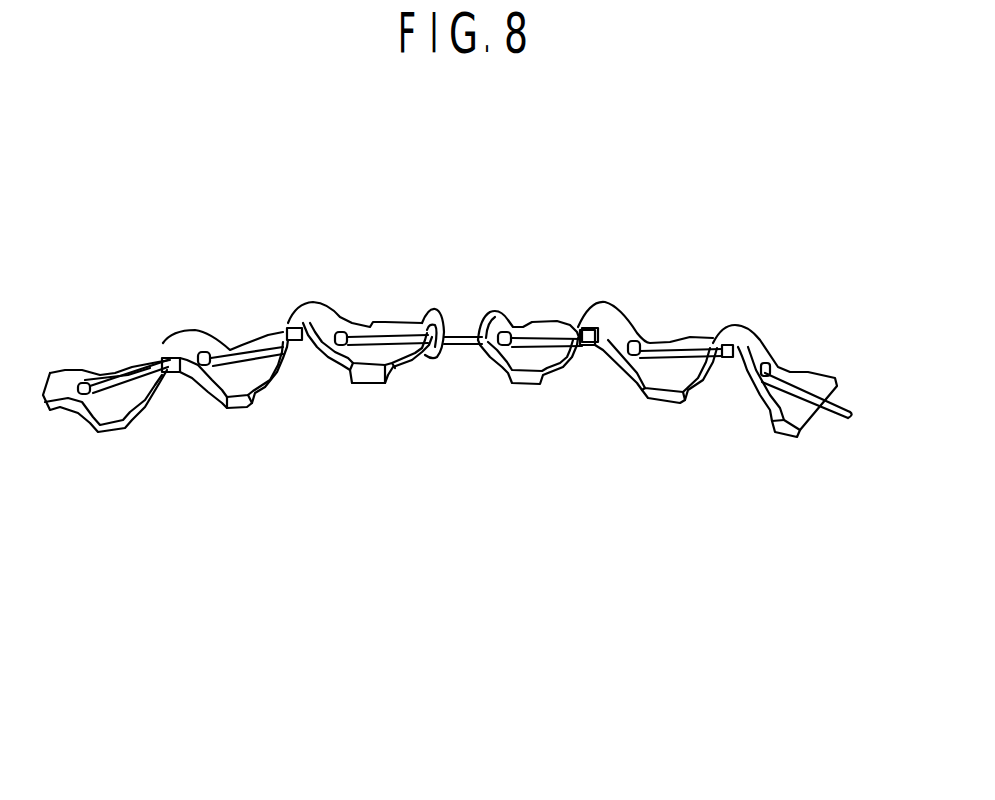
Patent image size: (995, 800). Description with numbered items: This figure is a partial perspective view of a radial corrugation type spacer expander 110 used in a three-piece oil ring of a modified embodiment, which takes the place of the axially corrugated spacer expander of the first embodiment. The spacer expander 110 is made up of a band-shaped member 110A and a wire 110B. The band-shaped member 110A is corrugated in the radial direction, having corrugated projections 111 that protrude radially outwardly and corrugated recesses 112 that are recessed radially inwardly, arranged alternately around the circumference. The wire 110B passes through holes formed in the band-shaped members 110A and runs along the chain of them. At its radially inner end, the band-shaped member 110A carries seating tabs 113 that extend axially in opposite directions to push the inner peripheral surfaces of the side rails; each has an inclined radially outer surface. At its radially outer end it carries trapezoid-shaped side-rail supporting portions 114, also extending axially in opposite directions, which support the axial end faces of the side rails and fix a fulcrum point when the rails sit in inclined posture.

The spacer expander 110 is at (531, 523).
The band-shaped member 110A is at (757, 348).
The wire 110B is at (452, 343).
The corrugated projection 111 is at (318, 312).
The corrugated recess 112 is at (545, 320).
The seating tab 113 is at (235, 407).
The side-rail supporting portion 114 is at (165, 355).